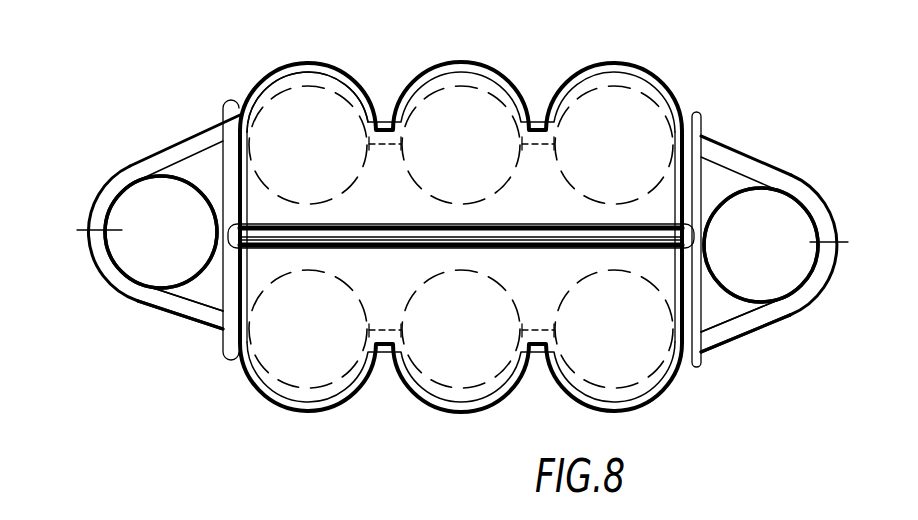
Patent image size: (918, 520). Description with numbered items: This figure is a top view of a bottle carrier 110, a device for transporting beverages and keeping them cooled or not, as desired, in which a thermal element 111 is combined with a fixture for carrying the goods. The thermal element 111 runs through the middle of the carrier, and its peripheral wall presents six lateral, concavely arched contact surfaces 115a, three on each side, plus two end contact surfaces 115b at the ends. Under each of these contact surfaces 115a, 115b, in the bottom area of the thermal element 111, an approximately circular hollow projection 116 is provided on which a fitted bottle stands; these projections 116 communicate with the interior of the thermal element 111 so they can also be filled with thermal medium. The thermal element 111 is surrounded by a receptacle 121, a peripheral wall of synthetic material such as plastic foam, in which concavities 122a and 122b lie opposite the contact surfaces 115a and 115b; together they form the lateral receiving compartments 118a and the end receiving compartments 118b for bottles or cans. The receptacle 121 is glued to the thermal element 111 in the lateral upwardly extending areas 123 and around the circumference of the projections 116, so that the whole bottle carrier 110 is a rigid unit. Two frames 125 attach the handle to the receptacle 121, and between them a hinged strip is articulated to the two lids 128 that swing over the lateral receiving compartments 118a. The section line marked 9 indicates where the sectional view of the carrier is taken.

The bottle carrier 110 is at (700, 63).
The thermal element 111 is at (383, 183).
The lateral contact surface 115a is at (579, 184).
The end contact surface 115b is at (192, 188).
The hollow projection 116 is at (789, 278).
The lateral receiving compartment 118a is at (325, 362).
The end receiving compartment 118b is at (134, 266).
The receptacle 121 is at (503, 82).
The lateral concavity 122a is at (465, 75).
The end concavity 122b is at (788, 191).
The lateral upwardly extending area 123 is at (199, 154).
The frame 125 is at (230, 105).
The lid 128 is at (324, 80).
The section line 9- 9 is at (77, 230).